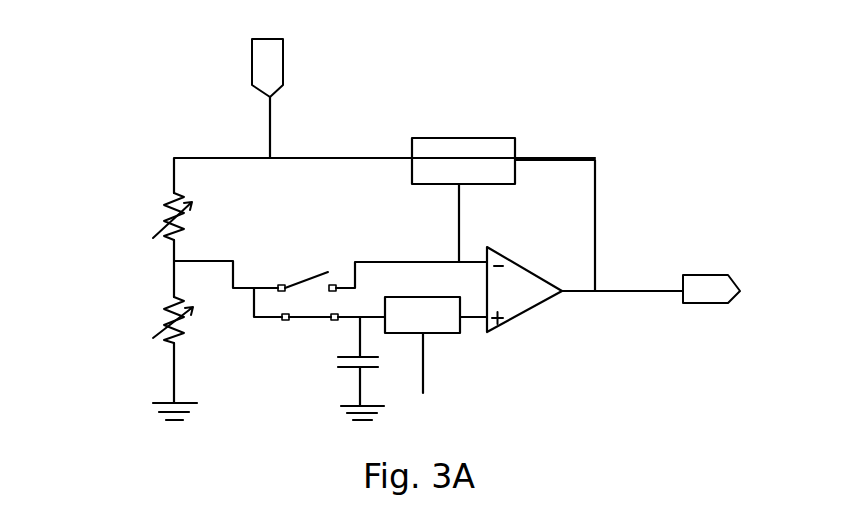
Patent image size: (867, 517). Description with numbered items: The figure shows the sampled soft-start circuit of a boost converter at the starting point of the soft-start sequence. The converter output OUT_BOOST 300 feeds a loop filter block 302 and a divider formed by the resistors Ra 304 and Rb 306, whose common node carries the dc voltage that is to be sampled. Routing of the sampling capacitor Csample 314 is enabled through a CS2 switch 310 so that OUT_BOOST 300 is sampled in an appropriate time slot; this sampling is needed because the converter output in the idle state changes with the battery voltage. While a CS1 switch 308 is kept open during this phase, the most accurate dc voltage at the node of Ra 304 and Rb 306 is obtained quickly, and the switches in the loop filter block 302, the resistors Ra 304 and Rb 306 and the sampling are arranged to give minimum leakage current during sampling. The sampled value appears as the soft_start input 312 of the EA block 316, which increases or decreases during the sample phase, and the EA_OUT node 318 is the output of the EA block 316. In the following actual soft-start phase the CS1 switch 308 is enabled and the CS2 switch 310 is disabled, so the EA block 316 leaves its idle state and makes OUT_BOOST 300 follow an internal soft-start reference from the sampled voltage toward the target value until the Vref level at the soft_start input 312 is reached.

The OUT_BOOST 300 is at (260, 36).
The loop filter block 302 is at (471, 138).
The resistor Ra 304 is at (181, 204).
The resistor Rb 306 is at (181, 308).
The CS1 switch 308 is at (305, 276).
The CS2 switch 310 is at (300, 315).
The soft_start input 312 is at (400, 297).
The Csample 314 is at (367, 358).
The EA block 316 is at (517, 262).
The EA_OUT node 318 is at (698, 275).